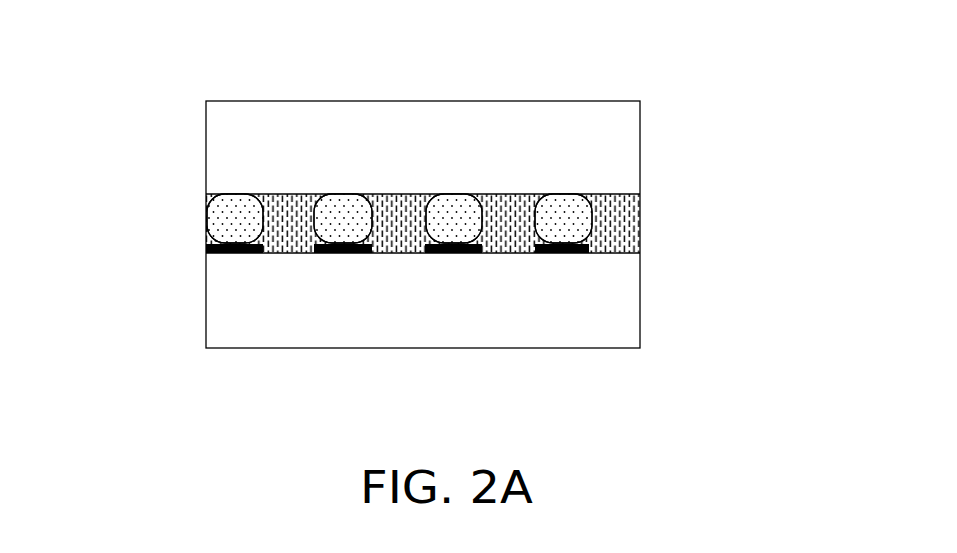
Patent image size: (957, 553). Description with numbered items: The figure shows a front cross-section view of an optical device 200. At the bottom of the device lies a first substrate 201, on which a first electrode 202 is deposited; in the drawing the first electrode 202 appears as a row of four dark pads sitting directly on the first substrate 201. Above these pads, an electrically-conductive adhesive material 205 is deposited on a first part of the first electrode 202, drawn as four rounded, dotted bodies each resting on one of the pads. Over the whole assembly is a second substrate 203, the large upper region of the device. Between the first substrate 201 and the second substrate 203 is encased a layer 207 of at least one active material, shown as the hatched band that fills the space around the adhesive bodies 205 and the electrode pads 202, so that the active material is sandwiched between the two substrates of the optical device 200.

The optical device 200 is at (708, 70).
The first substrate 201 is at (218, 303).
The first electrode 202 is at (213, 255).
The second substrate 203 is at (223, 155).
The electrically-conductive adhesive material 205 is at (452, 223).
The layer of at least one active material 207 is at (286, 234).